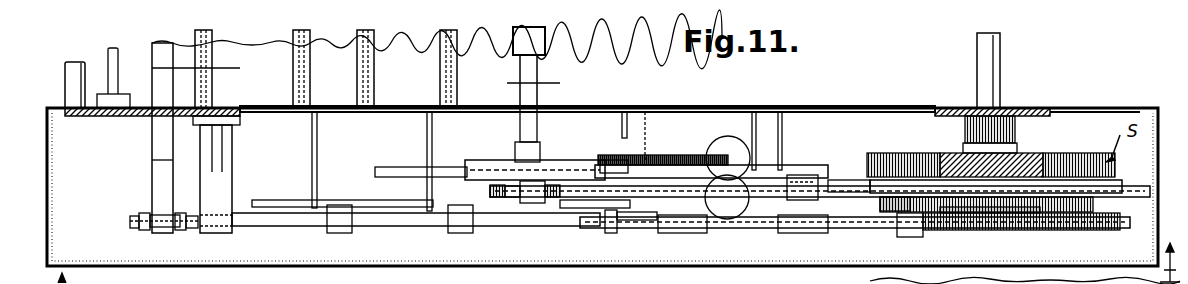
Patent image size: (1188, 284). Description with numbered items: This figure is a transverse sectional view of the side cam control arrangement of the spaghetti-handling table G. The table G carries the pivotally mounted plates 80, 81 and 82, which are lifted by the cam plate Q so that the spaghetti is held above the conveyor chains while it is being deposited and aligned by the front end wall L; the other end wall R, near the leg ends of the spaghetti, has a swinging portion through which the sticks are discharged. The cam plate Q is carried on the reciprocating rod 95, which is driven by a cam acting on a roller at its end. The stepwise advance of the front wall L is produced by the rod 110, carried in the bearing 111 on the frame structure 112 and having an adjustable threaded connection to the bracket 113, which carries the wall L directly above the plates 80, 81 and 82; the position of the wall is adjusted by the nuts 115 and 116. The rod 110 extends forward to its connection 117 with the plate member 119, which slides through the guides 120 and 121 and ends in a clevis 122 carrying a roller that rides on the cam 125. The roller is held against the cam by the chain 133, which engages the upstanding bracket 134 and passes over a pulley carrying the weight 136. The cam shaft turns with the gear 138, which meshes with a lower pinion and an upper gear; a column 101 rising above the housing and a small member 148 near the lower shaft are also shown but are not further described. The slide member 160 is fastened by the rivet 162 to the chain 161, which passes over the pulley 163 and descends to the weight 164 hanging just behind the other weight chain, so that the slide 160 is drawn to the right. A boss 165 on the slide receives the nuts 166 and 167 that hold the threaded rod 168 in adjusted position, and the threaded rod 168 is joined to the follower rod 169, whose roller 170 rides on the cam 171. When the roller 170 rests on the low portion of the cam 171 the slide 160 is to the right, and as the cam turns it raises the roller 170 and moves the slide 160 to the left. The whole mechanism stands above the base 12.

The base 12 is at (1025, 276).
The front end wall L is at (152, 43).
The table G is at (152, 68).
The other end wall R is at (545, 38).
The cam plate Q is at (365, 195).
The plate 80 is at (273, 90).
The plate 81 is at (343, 95).
The plate 82 is at (396, 93).
The reciprocating rod 95 is at (405, 226).
The spindle 101 is at (955, 142).
The rod 110 is at (163, 180).
The bearing 111 is at (218, 225).
The frame structure 112 is at (222, 150).
The bracket 113 is at (130, 220).
The nut 115 is at (147, 231).
The nut 116 is at (180, 231).
The connection 117 is at (635, 222).
The plate member 119 is at (770, 233).
The guide 120 is at (692, 233).
The guide 121 is at (810, 233).
The clevis 122 is at (897, 235).
The cam 125 is at (1090, 232).
The chain 133 is at (676, 233).
The upstanding bracket 134 is at (612, 208).
The weight 136 is at (745, 200).
The gear 138 is at (893, 155).
The pin 148 is at (610, 233).
The slide member 160 is at (483, 163).
The chain 161 is at (672, 155).
The rivet 162 is at (605, 160).
The pulley 163 is at (738, 138).
The weight 164 is at (748, 150).
The boss 165 is at (530, 203).
The nut 166 is at (512, 200).
The nut 167 is at (553, 200).
The threaded rod 168 is at (490, 190).
The follower rod 169 is at (840, 185).
The roller 170 is at (880, 205).
The cam 171 is at (1093, 205).